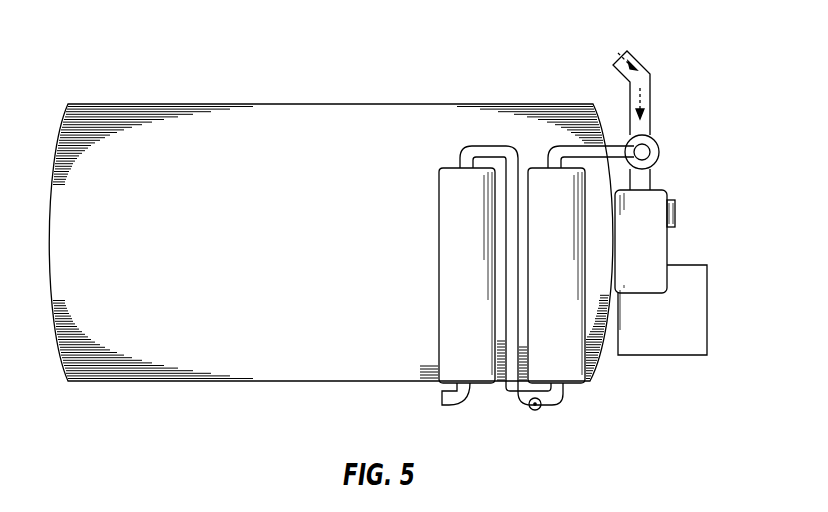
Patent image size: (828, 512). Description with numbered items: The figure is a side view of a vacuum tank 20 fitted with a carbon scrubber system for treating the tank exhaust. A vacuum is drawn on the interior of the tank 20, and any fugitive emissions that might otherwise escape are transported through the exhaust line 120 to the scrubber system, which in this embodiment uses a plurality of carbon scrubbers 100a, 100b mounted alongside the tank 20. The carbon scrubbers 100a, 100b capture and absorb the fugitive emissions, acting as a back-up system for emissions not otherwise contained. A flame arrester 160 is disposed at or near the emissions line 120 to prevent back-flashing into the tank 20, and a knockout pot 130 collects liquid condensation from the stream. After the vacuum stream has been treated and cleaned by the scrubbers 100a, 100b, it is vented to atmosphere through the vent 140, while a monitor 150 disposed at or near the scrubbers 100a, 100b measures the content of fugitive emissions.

The tank 20 is at (341, 103).
The carbon scrubber 100a is at (580, 287).
The carbon scrubber 100b is at (489, 287).
The exhaust line 120 is at (652, 92).
The knockout pot 130 is at (668, 246).
The vent 140 is at (456, 408).
The monitor 150 is at (536, 412).
The flame arrester 160 is at (659, 150).